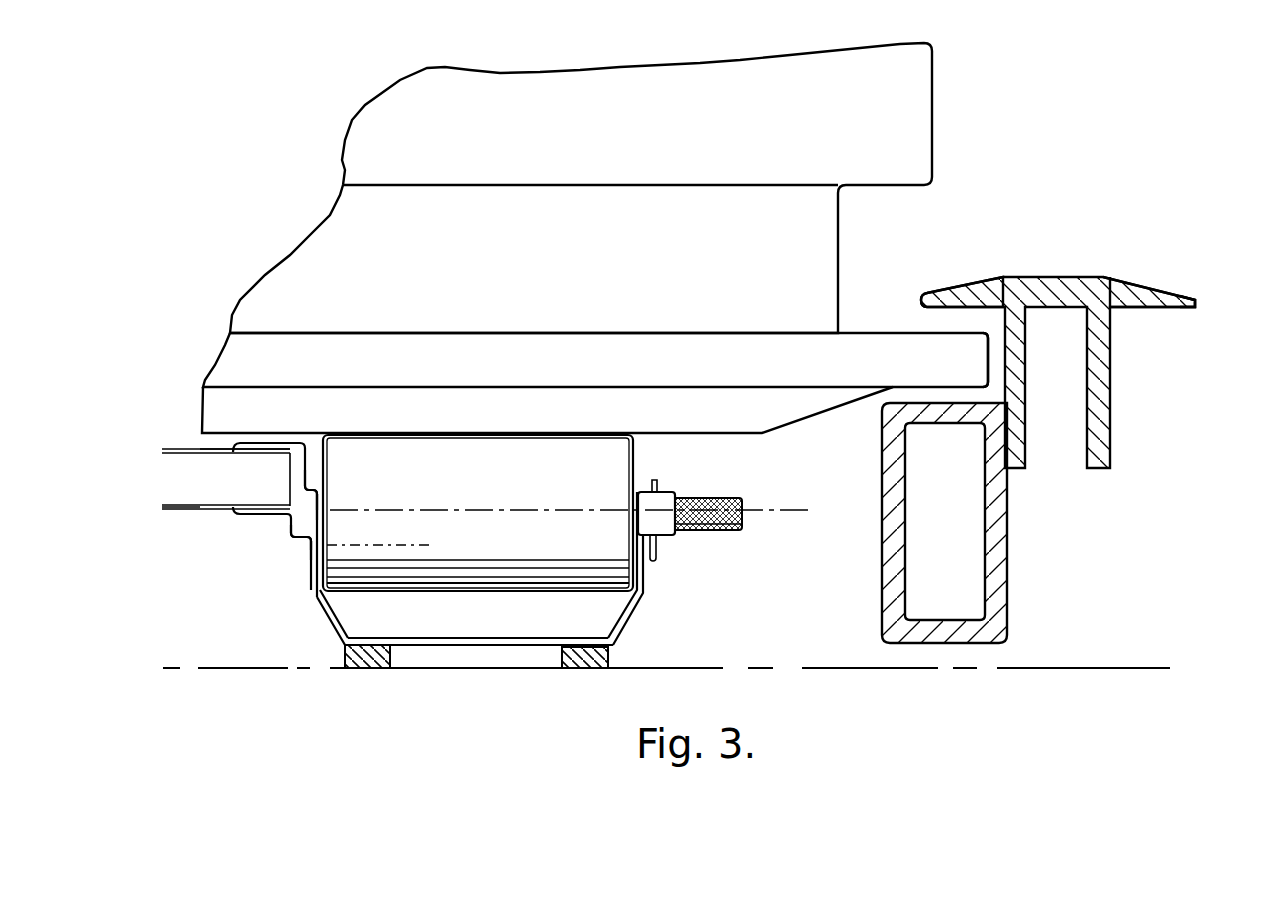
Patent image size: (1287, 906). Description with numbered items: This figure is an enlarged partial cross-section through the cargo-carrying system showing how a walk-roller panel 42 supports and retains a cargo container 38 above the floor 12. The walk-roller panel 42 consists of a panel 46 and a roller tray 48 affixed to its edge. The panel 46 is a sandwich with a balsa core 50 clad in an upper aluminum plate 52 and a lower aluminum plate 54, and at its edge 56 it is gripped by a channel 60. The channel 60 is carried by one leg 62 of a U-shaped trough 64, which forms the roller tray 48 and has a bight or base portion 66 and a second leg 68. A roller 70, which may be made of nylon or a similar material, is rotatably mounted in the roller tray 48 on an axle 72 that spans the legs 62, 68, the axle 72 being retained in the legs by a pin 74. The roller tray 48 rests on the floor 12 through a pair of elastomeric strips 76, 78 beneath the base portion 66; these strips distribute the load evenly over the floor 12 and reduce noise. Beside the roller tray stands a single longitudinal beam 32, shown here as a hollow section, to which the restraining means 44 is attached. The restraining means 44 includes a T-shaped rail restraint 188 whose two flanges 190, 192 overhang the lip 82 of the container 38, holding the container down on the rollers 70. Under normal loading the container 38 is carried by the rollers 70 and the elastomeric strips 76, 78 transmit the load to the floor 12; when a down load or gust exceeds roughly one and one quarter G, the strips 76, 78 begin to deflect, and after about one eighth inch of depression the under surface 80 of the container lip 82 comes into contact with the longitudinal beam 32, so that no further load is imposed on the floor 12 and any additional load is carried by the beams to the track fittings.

The floor 12 is at (853, 668).
The single longitudinal beam 32 is at (1016, 602).
The cargo container 38 is at (944, 127).
The walk-roller panel 42 is at (287, 534).
The restraining means 44 is at (1185, 284).
The panel 46 is at (173, 515).
The roller tray 48 is at (645, 596).
The balsa core 50 is at (168, 458).
The upper aluminum plate 52 is at (204, 456).
The lower aluminum plate 54 is at (221, 497).
The panel edge 56 is at (300, 486).
The channel 60 is at (268, 443).
The first leg 62 is at (308, 570).
The U-shaped trough 64 is at (325, 632).
The bight or base portion 66 is at (455, 640).
The second leg 68 is at (640, 562).
The roller 70 is at (622, 462).
The axle 72 is at (717, 508).
The pin 74 is at (658, 481).
The elastomeric strip 76 is at (362, 667).
The elastomeric strip 78 is at (573, 667).
The under surface 80 is at (940, 389).
The container lip 82 is at (985, 356).
The T-shaped rail restraint 188 is at (1206, 309).
The flange 190 is at (948, 296).
The flange 192 is at (1148, 287).